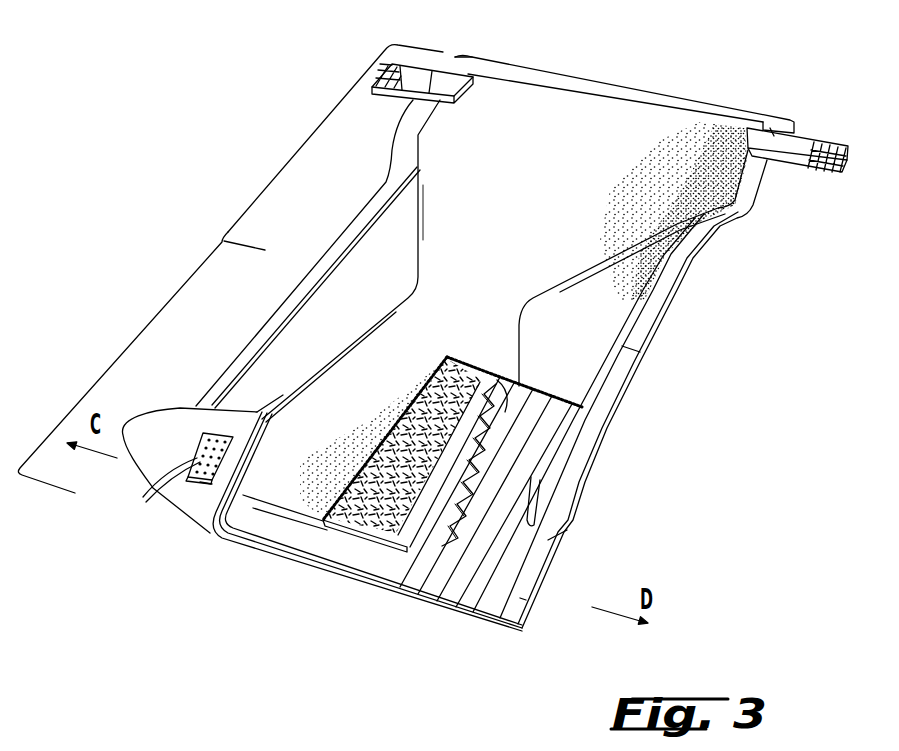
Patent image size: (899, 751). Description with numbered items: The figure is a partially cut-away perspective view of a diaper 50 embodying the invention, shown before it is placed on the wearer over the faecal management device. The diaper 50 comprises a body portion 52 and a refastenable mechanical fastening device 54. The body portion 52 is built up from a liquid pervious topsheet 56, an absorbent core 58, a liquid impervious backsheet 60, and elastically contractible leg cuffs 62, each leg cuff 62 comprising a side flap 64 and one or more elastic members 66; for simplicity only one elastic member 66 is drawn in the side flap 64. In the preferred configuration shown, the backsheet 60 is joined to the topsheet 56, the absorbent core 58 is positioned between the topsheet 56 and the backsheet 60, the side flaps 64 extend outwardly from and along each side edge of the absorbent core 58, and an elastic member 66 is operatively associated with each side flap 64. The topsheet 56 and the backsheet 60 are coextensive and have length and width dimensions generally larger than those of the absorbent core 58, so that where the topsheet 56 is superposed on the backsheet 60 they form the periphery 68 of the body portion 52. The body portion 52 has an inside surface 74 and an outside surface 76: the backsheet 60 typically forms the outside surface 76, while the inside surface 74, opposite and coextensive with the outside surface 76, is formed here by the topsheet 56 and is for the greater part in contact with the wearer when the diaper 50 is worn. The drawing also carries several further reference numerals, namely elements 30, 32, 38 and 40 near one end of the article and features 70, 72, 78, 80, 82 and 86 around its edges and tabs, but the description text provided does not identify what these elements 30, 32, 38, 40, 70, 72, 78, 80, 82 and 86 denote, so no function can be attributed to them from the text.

The sensor pouch 30 is at (197, 434).
The electrode pad 32 is at (220, 432).
The lead wires 38 is at (157, 488).
The electrode base 40 is at (204, 486).
The diaper 50 is at (637, 82).
The body portion 52 is at (662, 325).
The refastenable mechanical fastening device 54 is at (800, 106).
The liquid pervious topsheet 56 is at (342, 434).
The absorbent core 58 is at (396, 516).
The liquid impervious backsheet 60 is at (547, 553).
The elastically contractible leg cuff 62 is at (624, 348).
The side flap 64 is at (583, 378).
The elastic member 66 is at (560, 453).
The periphery 68 is at (265, 550).
The fold edge 70 is at (268, 318).
The tab 72 is at (500, 70).
The inside surface 74 is at (580, 97).
The outside surface 76 is at (422, 603).
The outer cover sheet 78 is at (310, 132).
The wrapper sheet 80 is at (122, 344).
The end seal 82 is at (740, 186).
The tab slot 86 is at (770, 128).